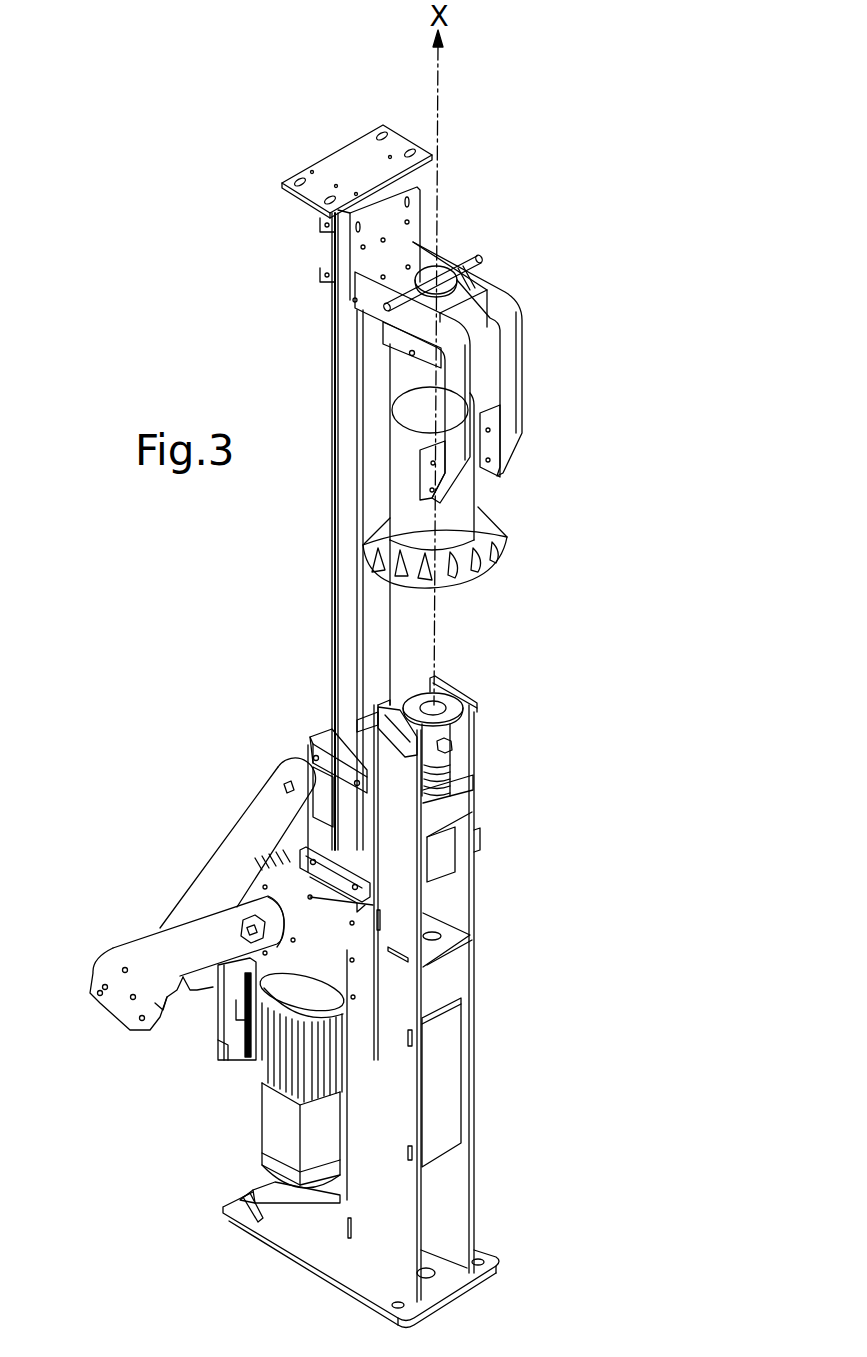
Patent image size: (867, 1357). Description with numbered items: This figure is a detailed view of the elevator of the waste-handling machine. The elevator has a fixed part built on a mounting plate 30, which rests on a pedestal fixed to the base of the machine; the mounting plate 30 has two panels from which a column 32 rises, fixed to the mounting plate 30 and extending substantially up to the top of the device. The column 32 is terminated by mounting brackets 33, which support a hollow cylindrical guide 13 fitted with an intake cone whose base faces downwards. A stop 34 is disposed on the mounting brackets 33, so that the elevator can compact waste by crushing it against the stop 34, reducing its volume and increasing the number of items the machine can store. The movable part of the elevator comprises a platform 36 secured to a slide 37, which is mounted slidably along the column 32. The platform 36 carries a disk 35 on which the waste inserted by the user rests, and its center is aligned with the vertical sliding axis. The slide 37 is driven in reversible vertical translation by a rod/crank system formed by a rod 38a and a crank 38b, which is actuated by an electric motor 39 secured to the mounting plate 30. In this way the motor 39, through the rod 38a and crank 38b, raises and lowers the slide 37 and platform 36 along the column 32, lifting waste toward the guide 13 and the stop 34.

The hollow cylindrical guide 13 is at (465, 510).
The mounting plate 30 is at (448, 1265).
The column 32 is at (345, 578).
The mounting brackets 33 is at (364, 292).
The stop 34 is at (468, 283).
The disk 35 is at (450, 717).
The platform 36 is at (450, 705).
The slide 37 is at (320, 732).
The rod 38a is at (233, 853).
The crank 38b is at (113, 1004).
The electric motor 39 is at (270, 1130).